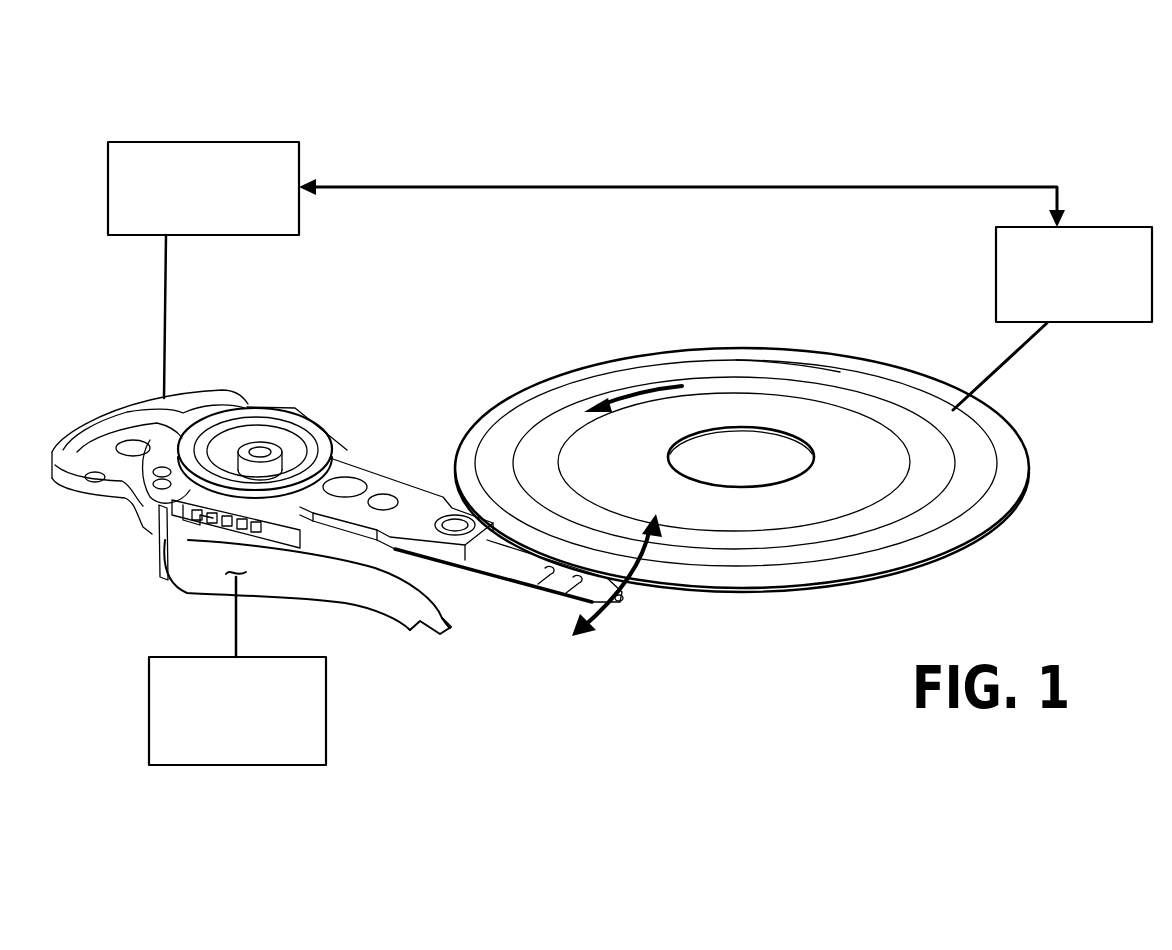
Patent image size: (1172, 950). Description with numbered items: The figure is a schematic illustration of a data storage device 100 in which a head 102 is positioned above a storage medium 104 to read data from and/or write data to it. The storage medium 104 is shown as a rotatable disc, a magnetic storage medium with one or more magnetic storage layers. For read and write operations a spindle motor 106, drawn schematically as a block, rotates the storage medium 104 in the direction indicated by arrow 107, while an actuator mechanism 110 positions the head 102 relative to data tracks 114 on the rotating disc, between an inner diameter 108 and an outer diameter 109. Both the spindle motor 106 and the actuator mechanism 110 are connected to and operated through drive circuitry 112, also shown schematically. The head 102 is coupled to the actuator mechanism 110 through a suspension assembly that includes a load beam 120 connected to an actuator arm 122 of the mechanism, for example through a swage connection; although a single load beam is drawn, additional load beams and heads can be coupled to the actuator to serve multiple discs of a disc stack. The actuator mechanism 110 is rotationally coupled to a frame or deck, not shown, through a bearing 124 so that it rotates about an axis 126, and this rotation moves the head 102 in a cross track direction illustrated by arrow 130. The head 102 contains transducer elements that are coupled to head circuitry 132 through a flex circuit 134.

The data storage device 100 is at (936, 118).
The head 102 is at (623, 601).
The storage medium 104 is at (884, 358).
The spindle motor 106 is at (1113, 226).
The arrow 107 is at (640, 392).
The inner diameter 108 is at (783, 428).
The outer diameter 109 is at (748, 348).
The actuator mechanism 110 is at (384, 474).
The drive circuitry 112 is at (297, 152).
The data tracks 114 is at (898, 492).
The load beam 120 is at (500, 548).
The actuator arm 122 is at (397, 478).
The bearing 124 is at (252, 445).
The axis 126 is at (260, 464).
The arrow 130 is at (643, 562).
The head circuitry 132 is at (326, 708).
The flex circuit 134 is at (318, 584).